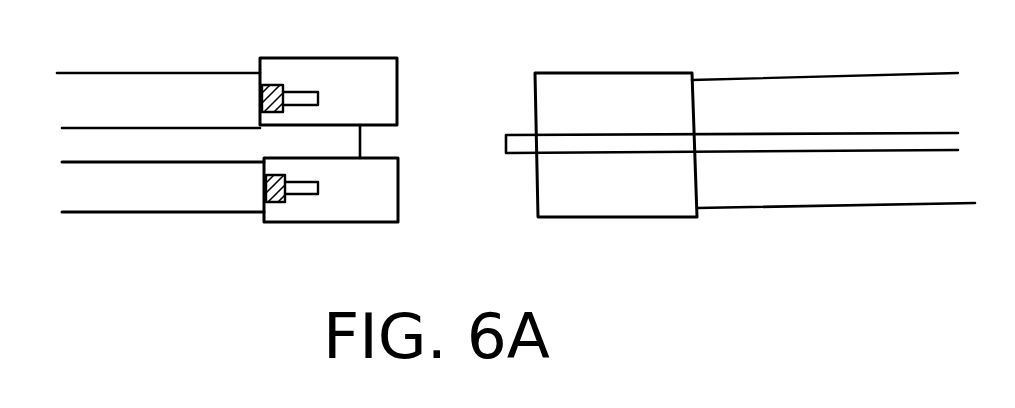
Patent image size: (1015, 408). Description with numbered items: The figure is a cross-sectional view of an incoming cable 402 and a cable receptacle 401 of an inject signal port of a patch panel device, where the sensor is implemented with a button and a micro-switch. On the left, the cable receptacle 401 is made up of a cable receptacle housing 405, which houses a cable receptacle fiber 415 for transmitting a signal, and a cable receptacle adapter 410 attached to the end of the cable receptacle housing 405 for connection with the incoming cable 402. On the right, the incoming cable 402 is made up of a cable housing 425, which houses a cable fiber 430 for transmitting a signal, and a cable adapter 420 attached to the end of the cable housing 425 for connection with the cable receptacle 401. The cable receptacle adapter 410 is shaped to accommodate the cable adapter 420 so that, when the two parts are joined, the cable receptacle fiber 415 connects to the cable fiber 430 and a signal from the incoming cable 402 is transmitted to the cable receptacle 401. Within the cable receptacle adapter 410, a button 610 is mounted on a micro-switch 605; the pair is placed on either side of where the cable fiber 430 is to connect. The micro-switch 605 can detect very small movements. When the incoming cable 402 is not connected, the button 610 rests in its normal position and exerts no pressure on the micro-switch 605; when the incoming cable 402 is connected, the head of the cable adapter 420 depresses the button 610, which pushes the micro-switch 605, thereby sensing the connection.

The cable receptacle 401 is at (178, 261).
The incoming cable 402 is at (782, 254).
The cable receptacle housing 405 is at (172, 75).
The cable receptacle fiber 415 is at (118, 136).
The cable receptacle adapter 410 is at (352, 70).
The micro-switch 605 is at (293, 71).
The button 610 is at (318, 98).
The cable adapter 420 is at (617, 82).
The cable housing 425 is at (765, 84).
The cable fiber 430 is at (526, 135).